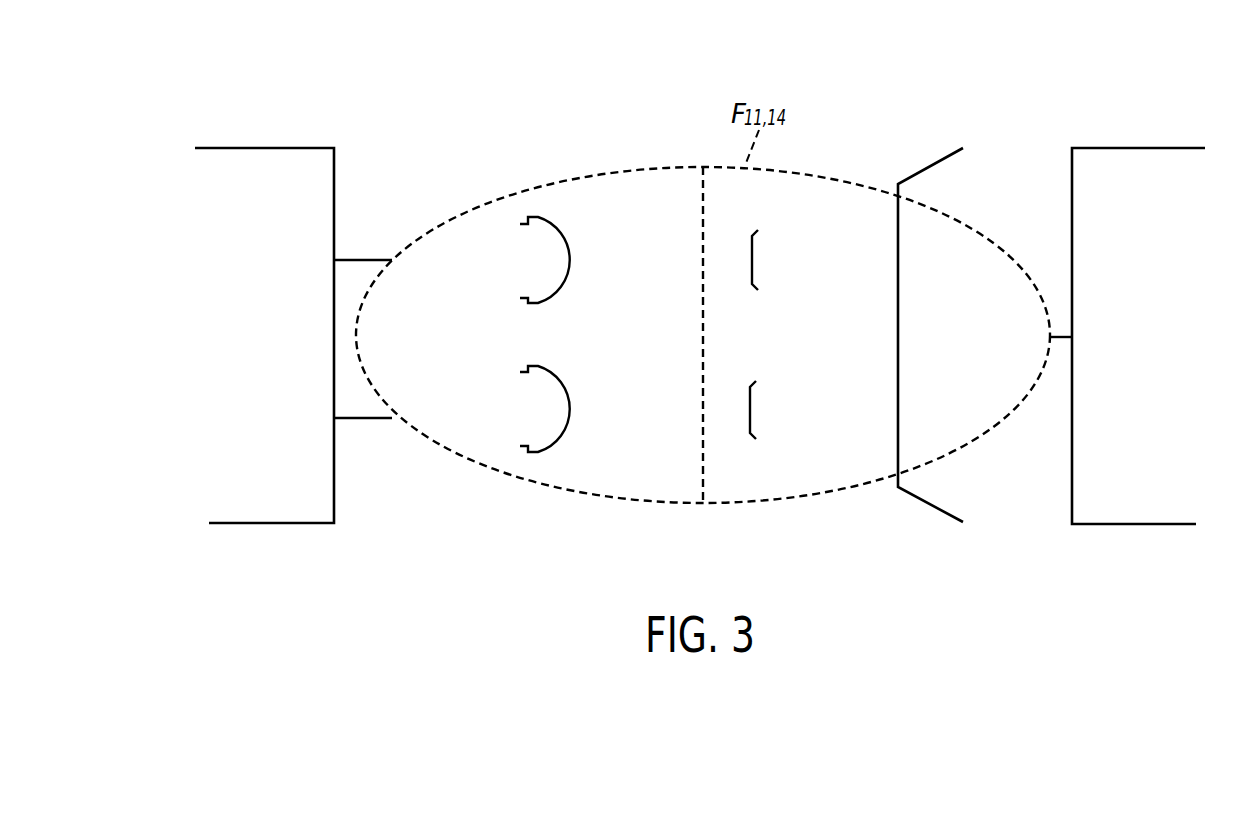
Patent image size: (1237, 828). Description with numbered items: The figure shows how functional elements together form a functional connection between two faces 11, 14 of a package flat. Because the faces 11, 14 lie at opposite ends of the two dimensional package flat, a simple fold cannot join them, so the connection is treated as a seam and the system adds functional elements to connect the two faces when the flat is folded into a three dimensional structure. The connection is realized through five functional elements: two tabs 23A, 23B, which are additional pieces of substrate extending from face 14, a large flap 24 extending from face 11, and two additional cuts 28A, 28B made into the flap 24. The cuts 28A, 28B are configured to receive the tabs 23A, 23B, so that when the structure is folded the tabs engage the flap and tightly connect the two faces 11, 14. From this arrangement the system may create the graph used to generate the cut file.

The face 11 is at (1073, 278).
The face 14 is at (334, 333).
The tab 23A is at (570, 262).
The tab 23B is at (570, 410).
The flap 24 is at (899, 320).
The cut 28A is at (753, 258).
The cut 28B is at (751, 407).